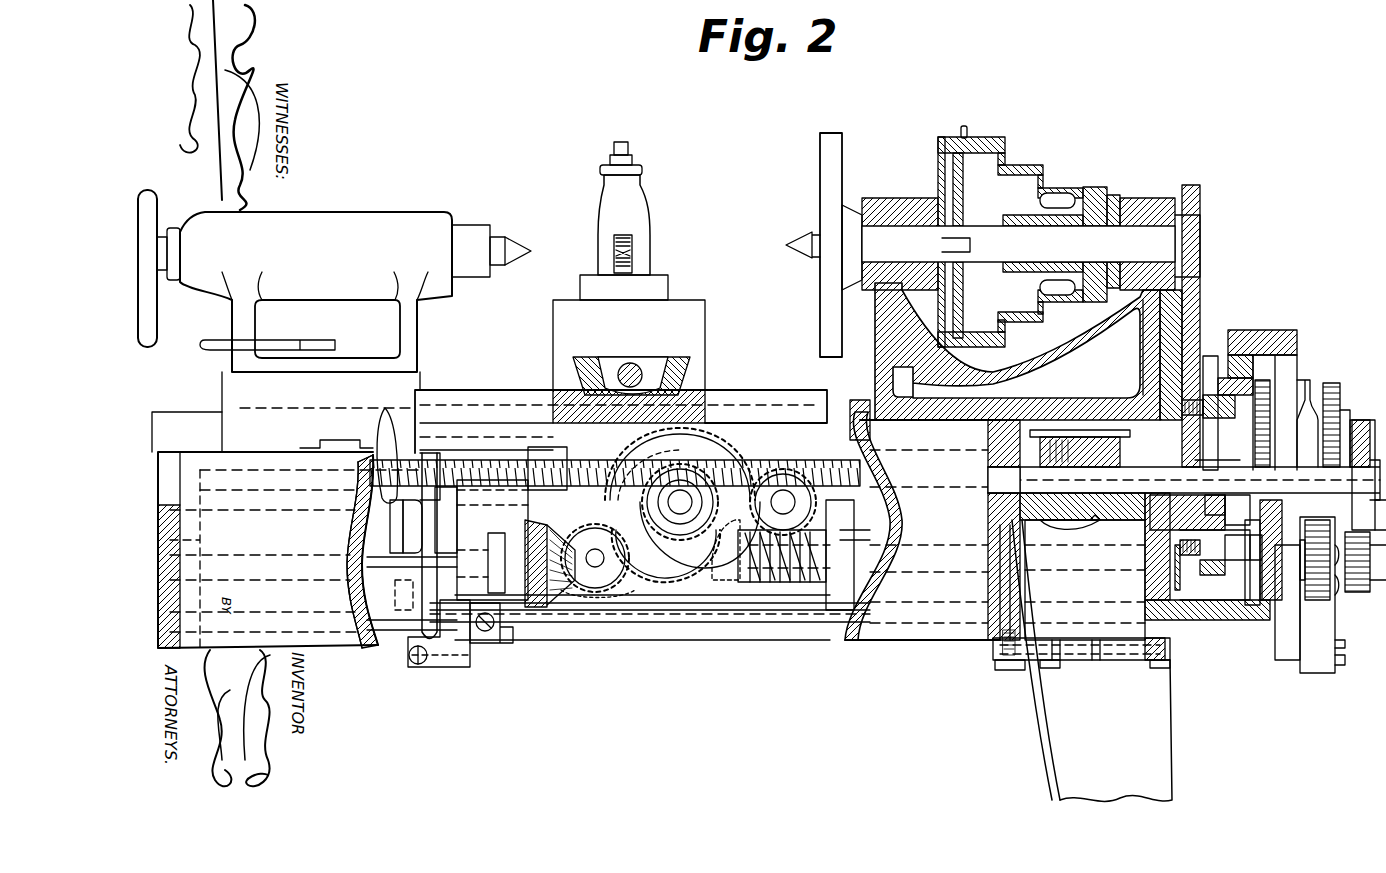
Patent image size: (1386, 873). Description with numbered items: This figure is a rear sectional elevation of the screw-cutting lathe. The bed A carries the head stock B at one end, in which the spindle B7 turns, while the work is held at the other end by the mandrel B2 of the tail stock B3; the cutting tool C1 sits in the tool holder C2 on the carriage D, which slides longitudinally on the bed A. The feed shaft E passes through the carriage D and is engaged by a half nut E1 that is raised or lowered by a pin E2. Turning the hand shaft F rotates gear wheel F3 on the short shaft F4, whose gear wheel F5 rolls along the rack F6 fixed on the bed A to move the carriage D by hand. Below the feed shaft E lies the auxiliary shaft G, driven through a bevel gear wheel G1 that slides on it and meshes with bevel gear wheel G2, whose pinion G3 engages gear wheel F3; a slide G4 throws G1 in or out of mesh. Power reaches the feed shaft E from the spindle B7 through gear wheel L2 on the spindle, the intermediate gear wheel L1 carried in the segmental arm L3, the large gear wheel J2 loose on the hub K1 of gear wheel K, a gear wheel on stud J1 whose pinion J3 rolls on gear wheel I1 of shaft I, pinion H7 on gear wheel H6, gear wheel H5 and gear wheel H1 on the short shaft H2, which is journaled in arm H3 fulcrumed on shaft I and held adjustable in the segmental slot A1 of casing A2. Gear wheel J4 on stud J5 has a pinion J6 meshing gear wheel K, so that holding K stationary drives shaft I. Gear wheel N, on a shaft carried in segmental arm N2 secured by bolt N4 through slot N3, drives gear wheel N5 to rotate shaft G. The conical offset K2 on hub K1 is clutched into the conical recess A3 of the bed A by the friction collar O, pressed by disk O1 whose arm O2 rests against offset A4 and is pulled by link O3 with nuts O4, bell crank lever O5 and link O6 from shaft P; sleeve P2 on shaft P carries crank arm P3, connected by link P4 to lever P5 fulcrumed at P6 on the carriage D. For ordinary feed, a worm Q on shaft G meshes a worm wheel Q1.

The bed A is at (576, 538).
The segmental slot A1 is at (1298, 352).
The casing A2 is at (1280, 332).
The conical recess A3 is at (1120, 525).
The offset A4 is at (988, 552).
The head stock B is at (1005, 361).
The mandrel B2 is at (524, 250).
The tail stock B3 is at (438, 216).
The spindle B7 is at (1031, 244).
The cutting tool C1 is at (633, 250).
The tool holder C2 is at (646, 212).
The carriage D is at (787, 402).
The feed shaft E is at (386, 434).
The half nut E1 is at (420, 530).
The pin E2 is at (392, 512).
The shaft F is at (798, 510).
The gear wheel F3 is at (720, 432).
The short shaft F4 is at (680, 502).
The gear wheel F5 is at (726, 542).
The rack F6 is at (680, 464).
The auxiliary shaft G is at (855, 530).
The beveled gear wheel G1 is at (540, 605).
The bevel gear wheel G2 is at (596, 600).
The pinion G3 is at (666, 582).
The slide G4 is at (447, 555).
The gear wheel H1 is at (1340, 390).
The short shaft H2 is at (1358, 420).
The arm H3 is at (1308, 384).
The gear wheel H5 is at (1266, 408).
The gear wheel H6 is at (1275, 535).
The pinion H7 is at (1252, 520).
The shaft I is at (1184, 480).
The gear wheel I1 is at (1217, 487).
The stud J1 is at (1215, 565).
The large gear wheel J2 is at (1202, 566).
The pinion J3 is at (1253, 575).
The gear wheel J4 is at (1236, 355).
The stud J5 is at (1208, 406).
The pinion J6 is at (1210, 407).
The gear wheel K is at (1200, 498).
The hub K1 is at (1192, 500).
The conical offset K2 is at (1098, 522).
The intermediate gear wheel L1 is at (1200, 298).
The gear wheel L2 is at (1200, 228).
The segmental arm L3 is at (1150, 350).
The gear wheel N is at (1360, 592).
The segmental arm N2 is at (1320, 673).
The segmental slot N3 is at (1380, 522).
The bolt N4 is at (1340, 660).
The gear wheel N5 is at (1318, 602).
The friction collar O is at (1095, 520).
The disk O1 is at (988, 510).
The handle O2 is at (1035, 585).
The link O3 is at (1090, 660).
The nuts O4 is at (1060, 668).
The bell crank lever O5 is at (1035, 665).
The link O6 is at (1155, 662).
The shaft P is at (820, 625).
The sleeve P2 is at (514, 633).
The crank arm P3 is at (462, 667).
The link P4 is at (421, 665).
The lever P5 is at (390, 526).
The fulcrum P6 is at (395, 594).
The worm Q is at (789, 566).
The worm wheel Q1 is at (870, 535).